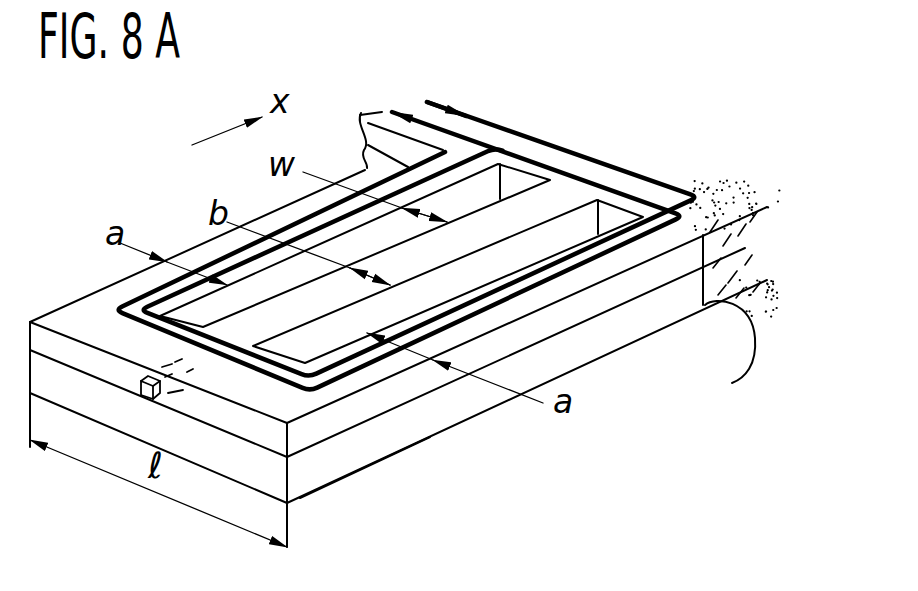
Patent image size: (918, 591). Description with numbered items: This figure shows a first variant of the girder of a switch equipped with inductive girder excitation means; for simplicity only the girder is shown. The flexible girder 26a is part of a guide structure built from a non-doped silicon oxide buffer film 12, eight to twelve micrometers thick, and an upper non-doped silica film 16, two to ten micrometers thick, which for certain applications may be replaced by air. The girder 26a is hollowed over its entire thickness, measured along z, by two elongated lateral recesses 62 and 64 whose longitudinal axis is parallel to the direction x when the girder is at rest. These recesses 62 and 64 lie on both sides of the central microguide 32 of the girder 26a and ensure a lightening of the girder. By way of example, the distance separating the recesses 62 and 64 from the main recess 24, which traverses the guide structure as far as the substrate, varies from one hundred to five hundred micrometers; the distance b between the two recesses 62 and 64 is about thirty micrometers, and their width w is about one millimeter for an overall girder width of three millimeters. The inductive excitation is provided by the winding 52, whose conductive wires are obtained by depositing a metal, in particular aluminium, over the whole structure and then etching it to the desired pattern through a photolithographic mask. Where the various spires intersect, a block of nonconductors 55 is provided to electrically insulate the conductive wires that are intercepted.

The non-doped silicon oxide buffer film 12 is at (42, 375).
The upper non-doped silica film 16 is at (30, 333).
The recess 24 is at (735, 330).
The flexible girder 26a is at (332, 490).
The central microguide 32 is at (143, 397).
The winding 52 is at (357, 372).
The block of nonconductors 55 is at (736, 201).
The lateral recess 62 is at (487, 187).
The lateral recess 64 is at (614, 216).